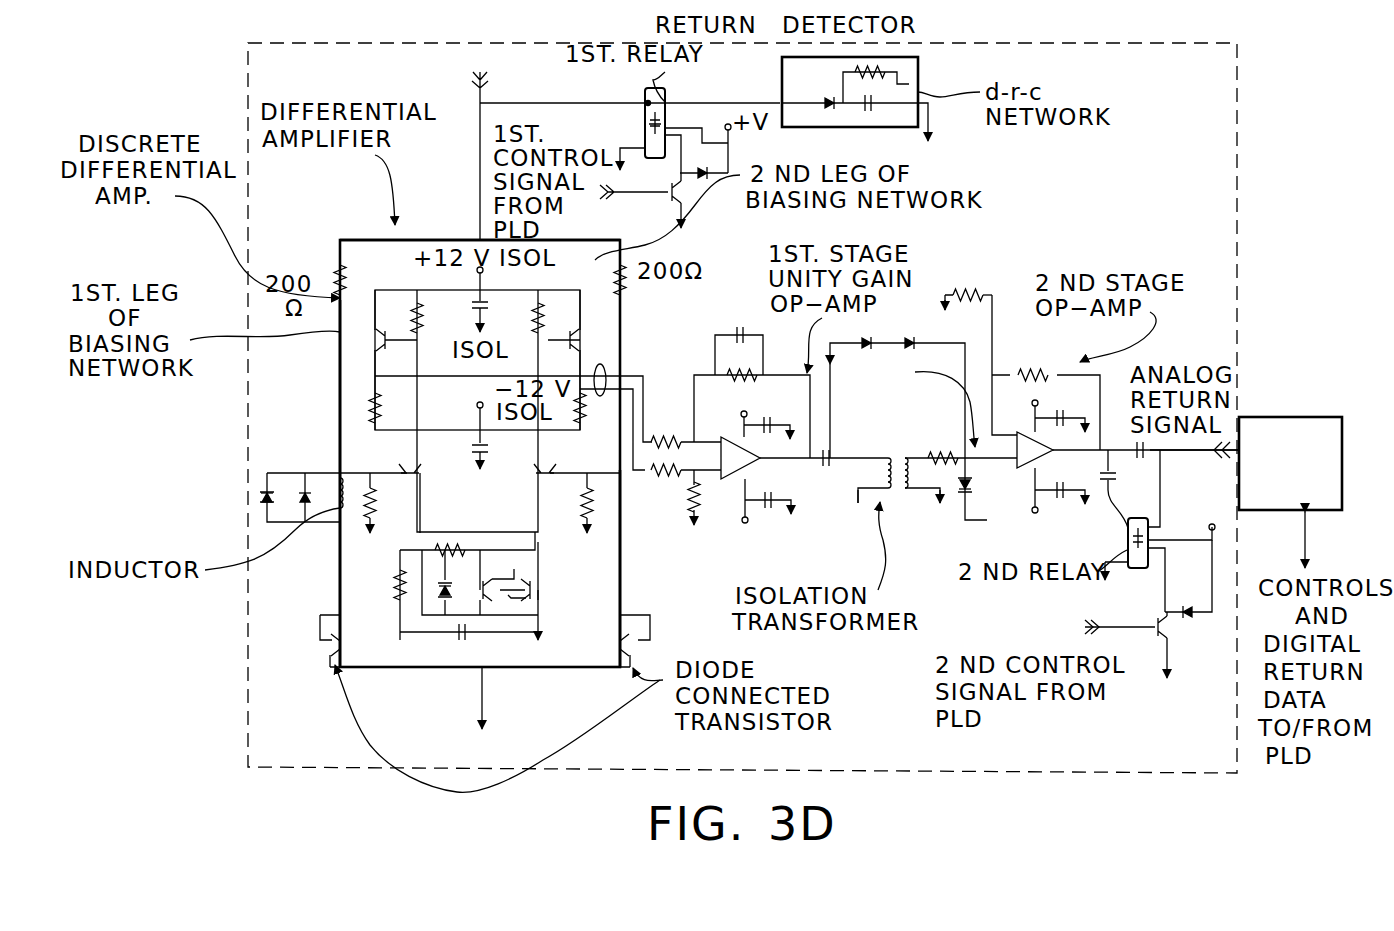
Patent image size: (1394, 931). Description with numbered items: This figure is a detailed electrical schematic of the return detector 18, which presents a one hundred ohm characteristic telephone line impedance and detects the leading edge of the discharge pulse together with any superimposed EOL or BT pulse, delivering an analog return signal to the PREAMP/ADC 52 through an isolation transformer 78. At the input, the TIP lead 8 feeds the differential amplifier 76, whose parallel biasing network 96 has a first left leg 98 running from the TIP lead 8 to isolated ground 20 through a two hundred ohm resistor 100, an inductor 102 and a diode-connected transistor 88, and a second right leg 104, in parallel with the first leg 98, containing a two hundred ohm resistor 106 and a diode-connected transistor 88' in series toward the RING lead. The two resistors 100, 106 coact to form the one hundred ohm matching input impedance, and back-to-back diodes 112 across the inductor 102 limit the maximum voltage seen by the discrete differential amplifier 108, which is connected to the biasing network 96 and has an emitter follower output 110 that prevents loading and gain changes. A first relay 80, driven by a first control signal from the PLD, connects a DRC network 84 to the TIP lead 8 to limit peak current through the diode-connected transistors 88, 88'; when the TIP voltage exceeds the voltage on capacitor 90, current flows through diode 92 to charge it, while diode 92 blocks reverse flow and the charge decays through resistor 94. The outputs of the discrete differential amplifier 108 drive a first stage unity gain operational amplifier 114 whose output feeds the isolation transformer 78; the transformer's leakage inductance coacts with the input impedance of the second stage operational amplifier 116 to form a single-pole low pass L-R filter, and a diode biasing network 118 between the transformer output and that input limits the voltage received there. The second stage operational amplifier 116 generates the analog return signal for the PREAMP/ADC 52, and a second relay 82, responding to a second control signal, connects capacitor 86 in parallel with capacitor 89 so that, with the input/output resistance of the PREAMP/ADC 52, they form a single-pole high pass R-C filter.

The TIP lead 8 is at (478, 92).
The return detector 18 is at (1238, 108).
The isolated ground 20 is at (484, 718).
The PREAMP/ADC 52 is at (1290, 410).
The differential amplifier 76 is at (443, 228).
The isolation transformer 78 is at (906, 505).
The first relay 80 is at (645, 118).
The second relay 82 is at (1143, 567).
The DRC network 84 is at (845, 128).
The capacitor 86 is at (1115, 508).
The diode-connected transistor 88 is at (322, 618).
The diode-connected transistor 88' is at (606, 624).
The capacitor 89 is at (1145, 455).
The capacitor 90 is at (868, 107).
The diode 92 is at (820, 103).
The resistor 94 is at (896, 83).
The parallel biasing network 96 is at (365, 240).
The first left leg 98 is at (342, 374).
The 200 ohm resistor 100 is at (339, 270).
The inductor 102 is at (338, 480).
The second right leg 104 is at (628, 547).
The 200 ohm resistor 106 is at (618, 280).
The discrete differential amplifier 108 is at (540, 274).
The emitter follower output 110 is at (606, 365).
The back-to-back diodes 112 is at (245, 499).
The first stage unity gain operational amplifier 114 is at (688, 497).
The second stage operational amplifier 116 is at (1044, 369).
The diode biasing network 118 is at (910, 333).